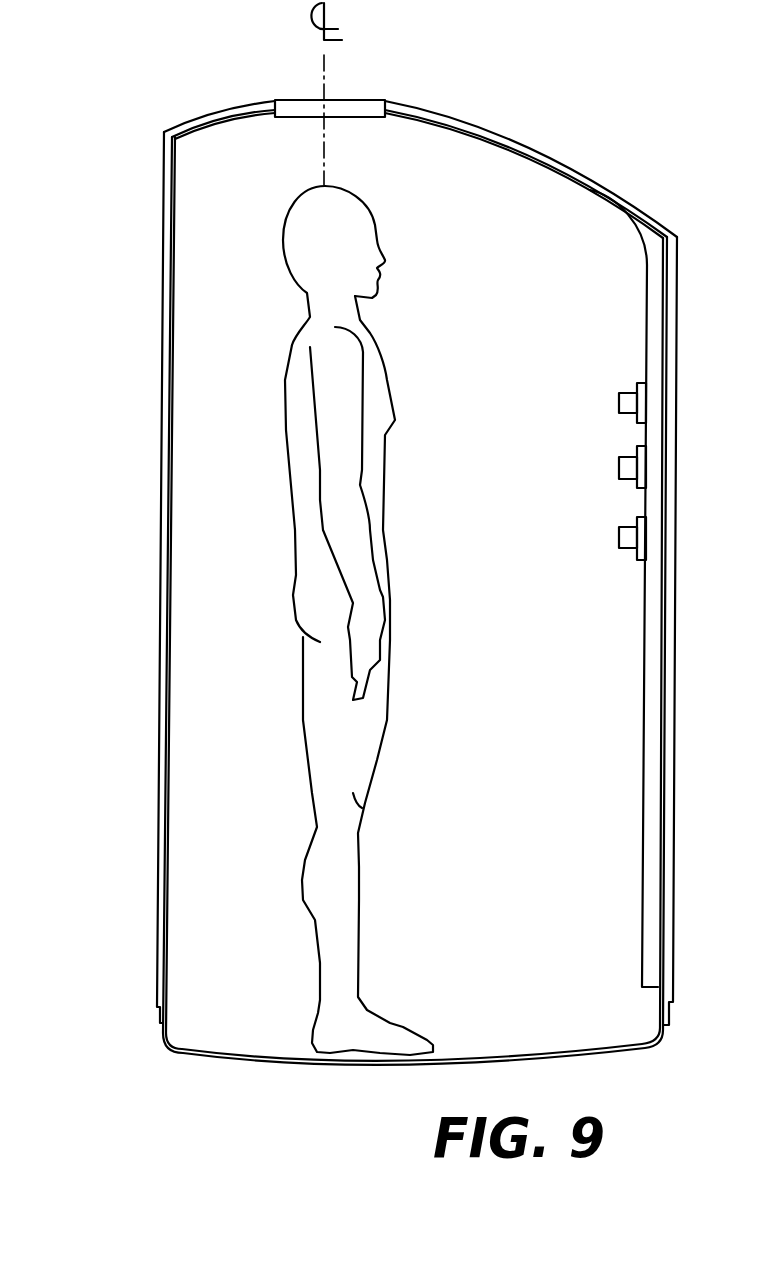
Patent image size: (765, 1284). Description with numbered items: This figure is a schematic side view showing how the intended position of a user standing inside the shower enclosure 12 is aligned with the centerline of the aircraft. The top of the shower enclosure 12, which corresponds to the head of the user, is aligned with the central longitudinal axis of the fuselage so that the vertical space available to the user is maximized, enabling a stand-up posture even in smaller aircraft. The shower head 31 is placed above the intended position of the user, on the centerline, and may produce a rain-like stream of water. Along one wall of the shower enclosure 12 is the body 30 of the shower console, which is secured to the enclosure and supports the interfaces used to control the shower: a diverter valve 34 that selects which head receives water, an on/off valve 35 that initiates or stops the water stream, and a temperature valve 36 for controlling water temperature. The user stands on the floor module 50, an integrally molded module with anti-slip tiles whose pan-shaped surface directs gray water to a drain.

The shower enclosure 12 is at (158, 698).
The body 30 is at (647, 285).
The shower head 31 is at (354, 118).
The diverter valve 34 is at (619, 400).
The on/off valve 35 is at (619, 468).
The temperature valve 36 is at (619, 549).
The floor module 50 is at (240, 1052).